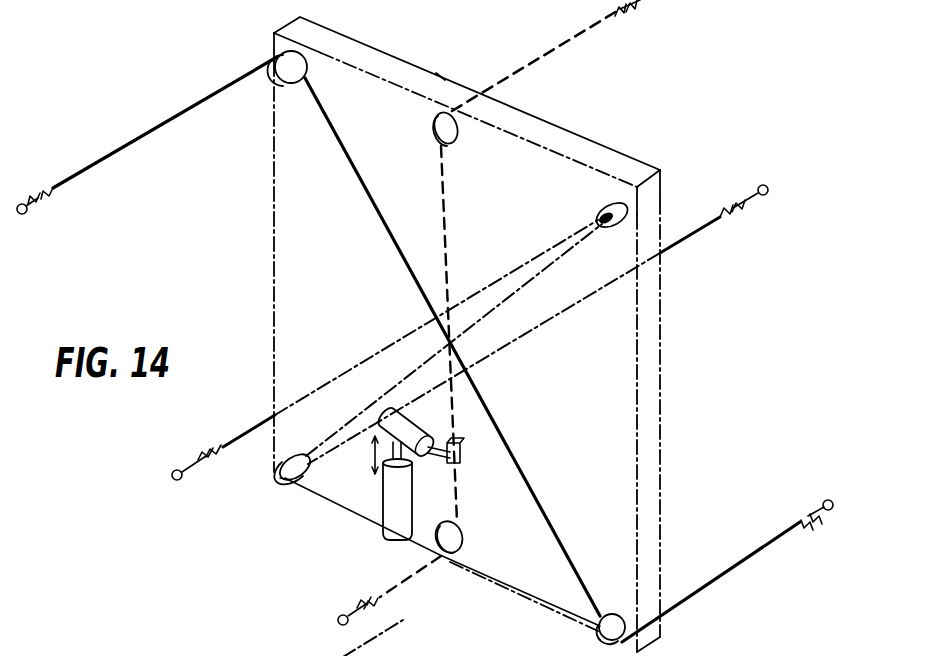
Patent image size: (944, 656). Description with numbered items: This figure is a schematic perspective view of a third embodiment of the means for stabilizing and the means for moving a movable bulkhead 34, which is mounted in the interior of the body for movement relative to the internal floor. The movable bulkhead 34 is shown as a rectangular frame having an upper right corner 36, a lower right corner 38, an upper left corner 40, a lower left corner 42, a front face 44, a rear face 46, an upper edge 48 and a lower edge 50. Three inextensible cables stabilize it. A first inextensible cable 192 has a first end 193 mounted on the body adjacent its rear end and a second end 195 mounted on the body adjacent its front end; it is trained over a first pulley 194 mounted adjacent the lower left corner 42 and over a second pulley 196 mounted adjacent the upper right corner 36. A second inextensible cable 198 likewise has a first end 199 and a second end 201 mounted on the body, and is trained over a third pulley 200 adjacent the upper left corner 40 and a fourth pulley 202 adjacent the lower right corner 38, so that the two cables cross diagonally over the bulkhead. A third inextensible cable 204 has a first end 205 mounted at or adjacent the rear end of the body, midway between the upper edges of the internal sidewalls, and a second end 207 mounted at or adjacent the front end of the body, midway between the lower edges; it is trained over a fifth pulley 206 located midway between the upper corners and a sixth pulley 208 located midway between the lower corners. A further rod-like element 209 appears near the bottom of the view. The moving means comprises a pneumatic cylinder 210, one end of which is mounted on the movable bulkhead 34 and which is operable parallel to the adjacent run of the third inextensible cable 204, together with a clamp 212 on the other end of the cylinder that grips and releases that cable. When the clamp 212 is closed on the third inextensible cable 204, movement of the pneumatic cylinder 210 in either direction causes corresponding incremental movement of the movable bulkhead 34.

The movable bulkhead 34 is at (397, 52).
The upper right corner 36 is at (273, 20).
The lower right corner 38 is at (278, 478).
The upper left corner 40 is at (638, 178).
The lower left corner 42 is at (672, 646).
The front face 44 is at (333, 490).
The rear face 46 is at (662, 498).
The upper edge 48 is at (439, 77).
The lower edge 50 is at (507, 597).
The first inextensible cable 192 is at (138, 140).
The first end of first inextensible cable 193 is at (825, 500).
The first pulley 194 is at (608, 614).
The second end of first inextensible cable 195 is at (24, 215).
The second pulley 196 is at (287, 74).
The second inextensible cable 198 is at (232, 440).
The first end of second inextensible cable 199 is at (766, 184).
The third pulley 200 is at (601, 214).
The second end of second inextensible cable 201 is at (174, 481).
The fourth pulley 202 is at (297, 456).
The third inextensible cable 204 is at (565, 40).
The first end of third inextensible cable 205 is at (645, 2).
The fifth pulley 206 is at (450, 135).
The second end of third inextensible cable 207 is at (341, 615).
The sixth pulley 208 is at (462, 540).
The rod 209 is at (393, 627).
The pneumatic cylinder 210 is at (380, 527).
The clamp 212 is at (410, 424).